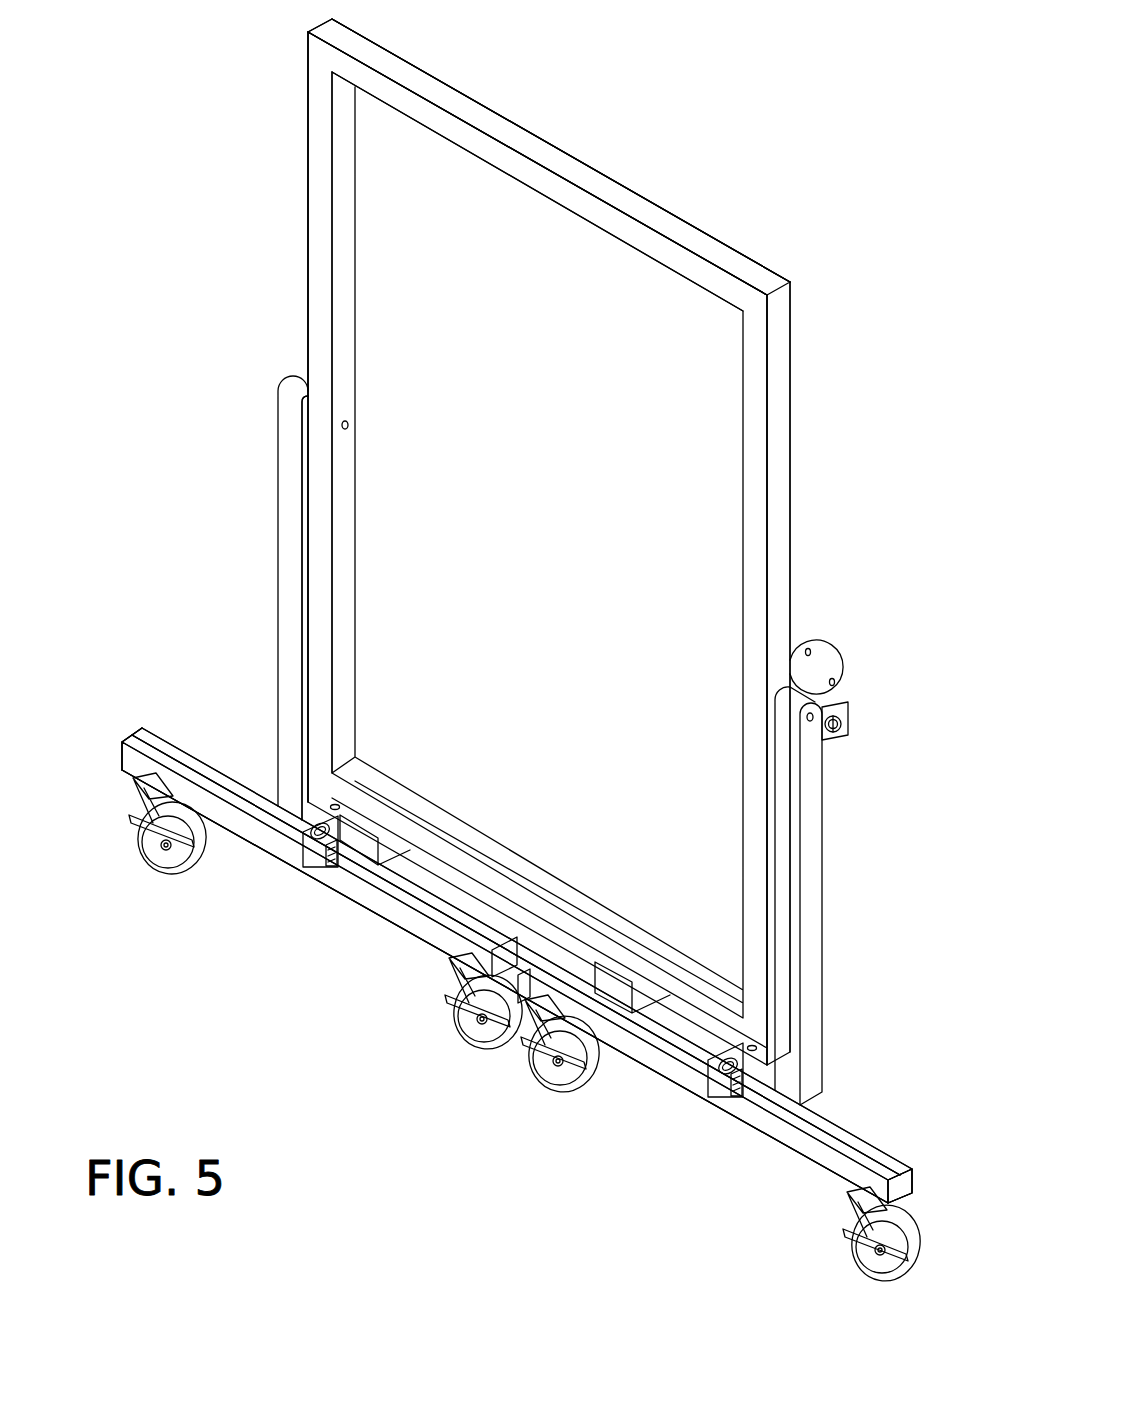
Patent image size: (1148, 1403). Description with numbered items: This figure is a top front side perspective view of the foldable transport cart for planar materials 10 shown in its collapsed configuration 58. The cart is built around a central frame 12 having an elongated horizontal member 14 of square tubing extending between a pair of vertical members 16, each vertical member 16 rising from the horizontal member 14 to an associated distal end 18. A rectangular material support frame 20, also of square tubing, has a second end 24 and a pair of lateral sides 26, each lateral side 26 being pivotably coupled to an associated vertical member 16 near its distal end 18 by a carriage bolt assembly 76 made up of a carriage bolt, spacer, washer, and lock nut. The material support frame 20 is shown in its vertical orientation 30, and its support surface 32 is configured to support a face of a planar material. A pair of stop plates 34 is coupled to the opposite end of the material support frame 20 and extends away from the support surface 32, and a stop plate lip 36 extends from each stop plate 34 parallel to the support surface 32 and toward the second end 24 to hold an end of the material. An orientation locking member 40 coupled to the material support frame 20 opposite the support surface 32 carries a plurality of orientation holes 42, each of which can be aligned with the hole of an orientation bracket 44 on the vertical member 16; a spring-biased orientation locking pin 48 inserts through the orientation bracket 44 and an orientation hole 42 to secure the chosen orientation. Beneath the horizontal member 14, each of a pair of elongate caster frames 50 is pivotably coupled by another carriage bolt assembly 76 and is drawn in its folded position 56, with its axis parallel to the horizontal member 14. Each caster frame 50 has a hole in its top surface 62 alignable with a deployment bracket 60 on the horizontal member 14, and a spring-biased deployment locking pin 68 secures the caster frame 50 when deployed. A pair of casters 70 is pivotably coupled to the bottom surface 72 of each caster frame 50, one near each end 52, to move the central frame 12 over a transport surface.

The foldable transport cart for planar materials 10 is at (660, 115).
The central frame 12 is at (815, 903).
The horizontal member 14 is at (450, 893).
The vertical member 16 is at (287, 457).
The distal end 18 is at (298, 383).
The material support frame 20 is at (693, 263).
The second end 24 is at (487, 120).
The lateral side 26 is at (308, 152).
The vertical orientation 30 is at (812, 389).
The support surface 32 is at (550, 192).
The stop plate 34 is at (390, 841).
The stop plate lip 36 is at (353, 841).
The orientation locking member 40 is at (830, 663).
The orientation hole 42 is at (806, 648).
The orientation bracket 44 is at (850, 704).
The orientation locking pin 48 is at (834, 733).
The caster frame 50 is at (226, 818).
The end 52 is at (128, 752).
The folded position 56 is at (158, 702).
The collapsed configuration 58 is at (286, 32).
The deployment bracket 60 is at (312, 853).
The top surface 62 is at (205, 765).
The deployment locking pin 68 is at (318, 838).
The caster 70 is at (133, 870).
The bottom surface 72 is at (435, 948).
The carriage bolt assembly 76 is at (362, 427).